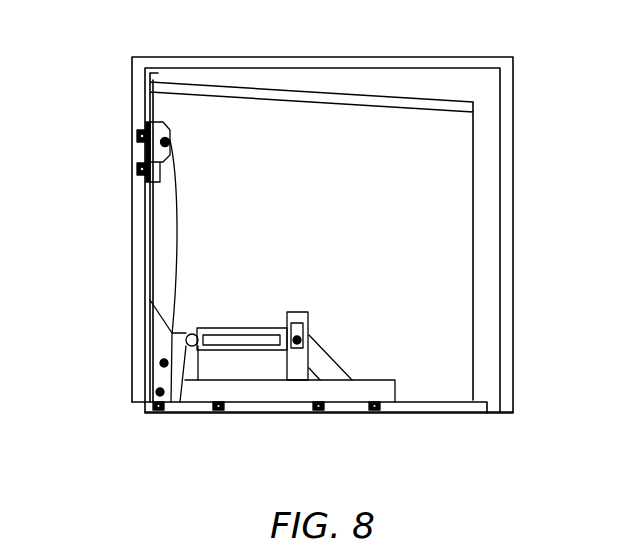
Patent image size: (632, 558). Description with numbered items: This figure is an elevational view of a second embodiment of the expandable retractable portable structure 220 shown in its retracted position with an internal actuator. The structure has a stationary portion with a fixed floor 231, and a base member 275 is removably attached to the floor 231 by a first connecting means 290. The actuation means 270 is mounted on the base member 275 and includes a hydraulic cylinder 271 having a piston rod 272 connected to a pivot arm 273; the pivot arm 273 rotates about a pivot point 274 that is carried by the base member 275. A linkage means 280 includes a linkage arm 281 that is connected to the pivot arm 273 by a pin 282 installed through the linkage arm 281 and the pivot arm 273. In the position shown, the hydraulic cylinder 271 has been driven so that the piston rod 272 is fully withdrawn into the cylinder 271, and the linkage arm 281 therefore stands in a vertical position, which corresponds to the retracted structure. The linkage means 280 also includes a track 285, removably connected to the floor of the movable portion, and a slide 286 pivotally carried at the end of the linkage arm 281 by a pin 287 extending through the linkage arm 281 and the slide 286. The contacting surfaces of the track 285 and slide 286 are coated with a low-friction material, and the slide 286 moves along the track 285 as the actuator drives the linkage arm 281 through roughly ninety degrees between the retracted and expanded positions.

The expandable retractable portable structure 220 is at (508, 58).
The fixed floor 231 is at (453, 400).
The actuation means 270 is at (309, 335).
The hydraulic cylinder 271 is at (257, 327).
The piston rod 272 is at (250, 297).
The pivot arm 273 is at (180, 372).
The pivot point 274 is at (160, 392).
The base member 275 is at (369, 386).
The linkage means 280 is at (168, 177).
The linkage arm 281 is at (167, 238).
The pin 282 is at (164, 363).
The track 285 is at (150, 177).
The slide 286 is at (170, 128).
The pin 287 is at (172, 141).
The first connecting means 290 is at (323, 412).